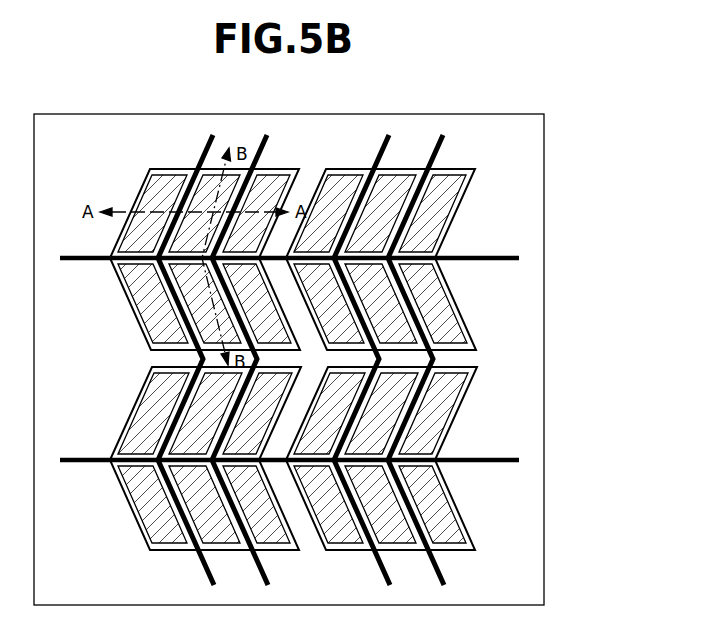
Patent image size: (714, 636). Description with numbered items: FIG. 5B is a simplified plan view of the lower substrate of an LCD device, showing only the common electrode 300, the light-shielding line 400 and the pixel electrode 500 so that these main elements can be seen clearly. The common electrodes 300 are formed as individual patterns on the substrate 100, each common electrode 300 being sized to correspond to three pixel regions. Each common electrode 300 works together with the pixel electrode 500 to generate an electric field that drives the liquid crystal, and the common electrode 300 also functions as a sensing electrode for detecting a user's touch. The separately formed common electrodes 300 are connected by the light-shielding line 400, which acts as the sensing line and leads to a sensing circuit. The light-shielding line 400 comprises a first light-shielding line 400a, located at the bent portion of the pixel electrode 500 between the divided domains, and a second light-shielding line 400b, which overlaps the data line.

The substrate 100 is at (544, 385).
The common electrode 300 is at (477, 342).
The light-shielding line 400 is at (373, 360).
The first light-shielding line 400a is at (519, 258).
The second light-shielding line 400b is at (402, 288).
The pixel electrode 500 is at (438, 215).